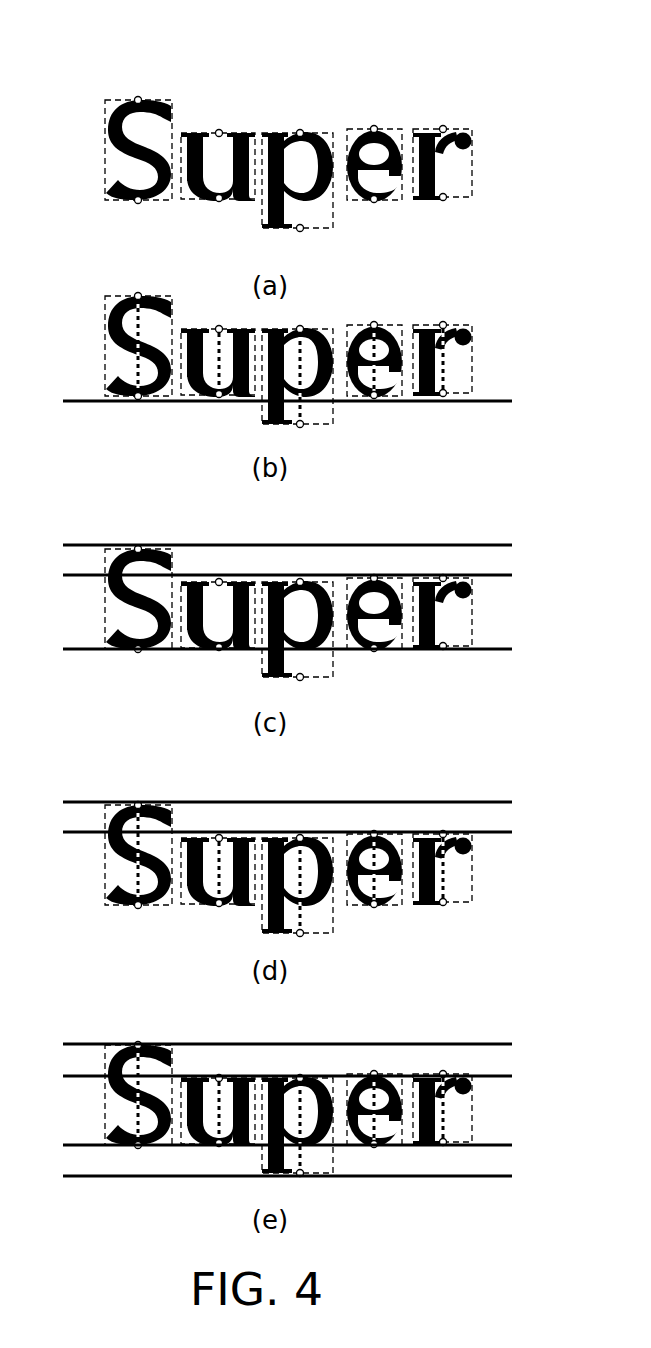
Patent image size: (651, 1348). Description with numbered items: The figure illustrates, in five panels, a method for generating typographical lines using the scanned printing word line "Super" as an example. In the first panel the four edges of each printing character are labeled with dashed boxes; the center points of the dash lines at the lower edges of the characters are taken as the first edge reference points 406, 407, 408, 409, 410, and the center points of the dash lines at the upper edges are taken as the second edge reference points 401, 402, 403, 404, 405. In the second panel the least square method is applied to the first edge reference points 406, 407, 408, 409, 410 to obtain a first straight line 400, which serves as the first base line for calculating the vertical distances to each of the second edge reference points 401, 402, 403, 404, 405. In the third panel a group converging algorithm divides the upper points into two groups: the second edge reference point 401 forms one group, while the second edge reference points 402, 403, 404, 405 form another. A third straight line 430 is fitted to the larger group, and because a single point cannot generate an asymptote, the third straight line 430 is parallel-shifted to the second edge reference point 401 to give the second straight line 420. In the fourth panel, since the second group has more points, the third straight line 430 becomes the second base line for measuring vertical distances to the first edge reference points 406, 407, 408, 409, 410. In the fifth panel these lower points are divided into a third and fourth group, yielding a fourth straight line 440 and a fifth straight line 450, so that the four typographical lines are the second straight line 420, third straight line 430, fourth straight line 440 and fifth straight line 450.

The first straight line 400 is at (307, 524).
The second edge reference point 401 is at (138, 96).
The second edge reference point 402 is at (219, 129).
The second edge reference point 403 is at (300, 129).
The second edge reference point 404 is at (374, 125).
The second edge reference point 405 is at (443, 125).
The first edge reference point 406 is at (138, 204).
The first edge reference point 407 is at (219, 202).
The first edge reference point 408 is at (300, 232).
The first edge reference point 409 is at (374, 203).
The first edge reference point 410 is at (443, 201).
The second straight line 420 is at (307, 793).
The third straight line 430 is at (307, 824).
The fourth straight line 440 is at (307, 1144).
The fifth straight line 450 is at (307, 1175).